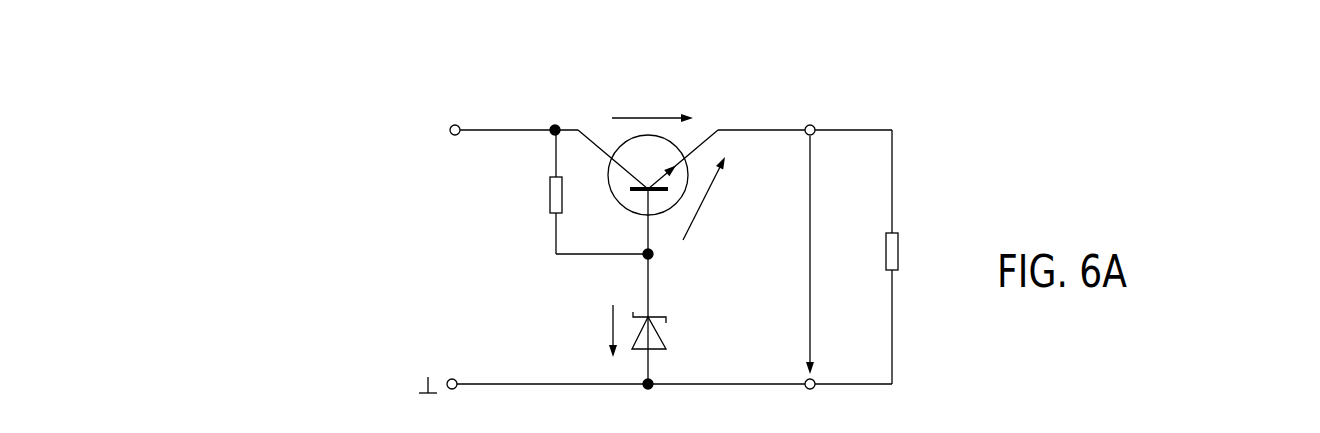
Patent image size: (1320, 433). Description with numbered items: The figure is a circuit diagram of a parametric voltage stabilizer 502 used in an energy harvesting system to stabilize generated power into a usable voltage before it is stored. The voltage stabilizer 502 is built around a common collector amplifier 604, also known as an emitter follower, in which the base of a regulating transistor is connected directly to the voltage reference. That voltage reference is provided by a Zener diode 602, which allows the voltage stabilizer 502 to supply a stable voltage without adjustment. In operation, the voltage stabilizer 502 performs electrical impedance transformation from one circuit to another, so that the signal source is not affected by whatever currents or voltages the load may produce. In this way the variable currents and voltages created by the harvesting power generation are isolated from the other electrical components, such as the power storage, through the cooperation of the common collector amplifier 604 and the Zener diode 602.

The voltage stabilizer 502 is at (1021, 122).
The common collector amplifier 604 is at (711, 113).
The Zener diode 602 is at (705, 343).